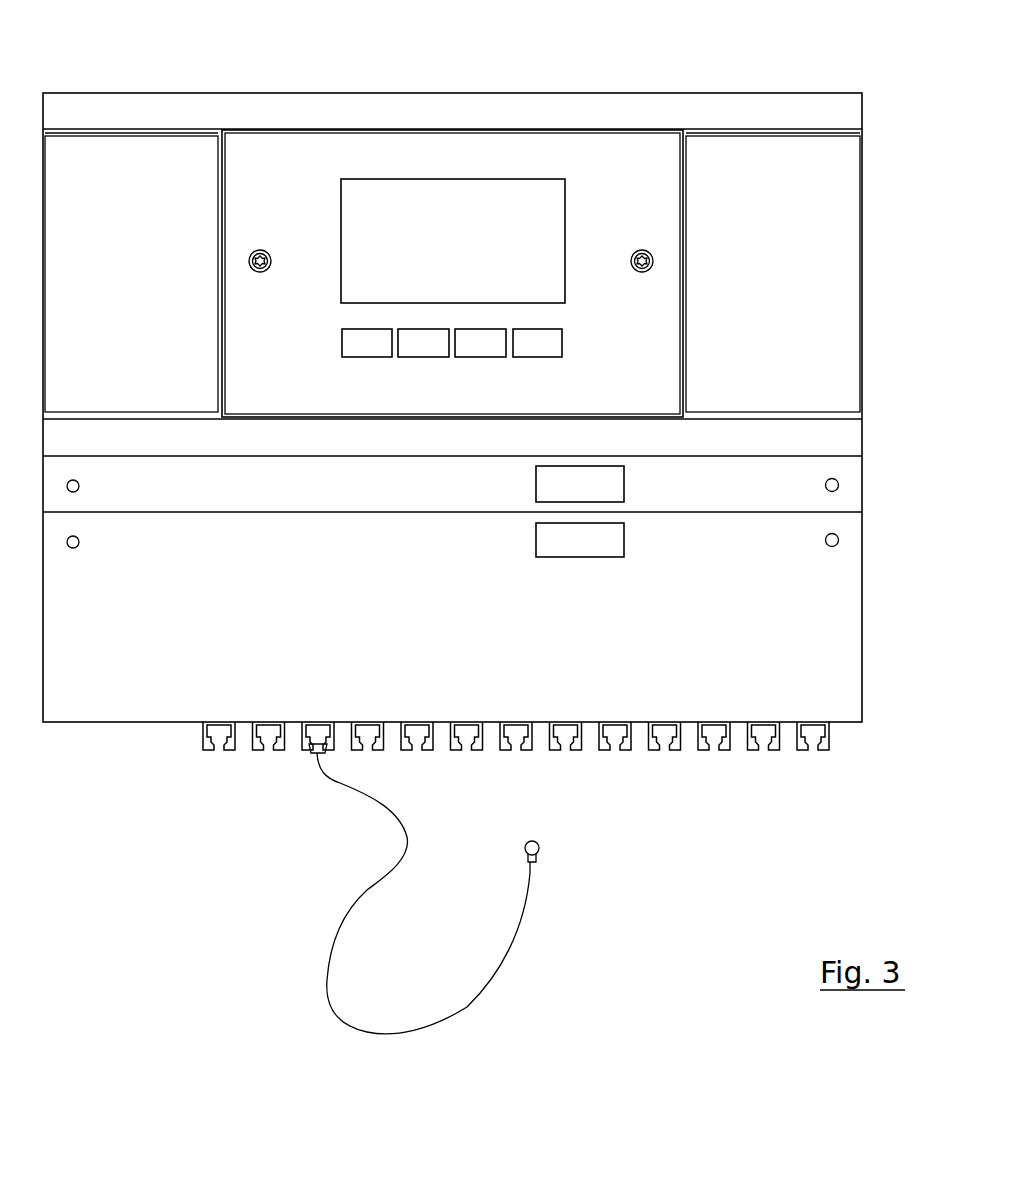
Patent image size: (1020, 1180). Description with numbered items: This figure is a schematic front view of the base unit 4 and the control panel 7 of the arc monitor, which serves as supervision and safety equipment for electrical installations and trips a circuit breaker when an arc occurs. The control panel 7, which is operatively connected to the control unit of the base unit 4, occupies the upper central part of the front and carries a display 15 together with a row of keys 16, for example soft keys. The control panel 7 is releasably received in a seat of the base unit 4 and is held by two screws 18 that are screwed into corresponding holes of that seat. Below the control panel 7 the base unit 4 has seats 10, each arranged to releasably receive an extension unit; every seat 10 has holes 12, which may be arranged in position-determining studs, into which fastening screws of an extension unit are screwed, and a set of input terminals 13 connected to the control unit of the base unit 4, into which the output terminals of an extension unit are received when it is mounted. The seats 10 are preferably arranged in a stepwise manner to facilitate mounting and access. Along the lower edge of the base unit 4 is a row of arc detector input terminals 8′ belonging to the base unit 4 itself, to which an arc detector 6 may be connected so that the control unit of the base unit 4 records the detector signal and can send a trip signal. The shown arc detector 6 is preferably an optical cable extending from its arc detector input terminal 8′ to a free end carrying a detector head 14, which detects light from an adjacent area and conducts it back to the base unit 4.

The base unit 4 is at (280, 112).
The control panel 7 is at (720, 258).
The display 15 is at (548, 200).
The key 16 is at (543, 343).
The screws 18 is at (265, 268).
The seat 10 is at (412, 503).
The holes 12 is at (80, 486).
The input terminals 13 is at (607, 483).
The arc detector input terminal 8′ is at (815, 744).
The arc detector 6 is at (343, 1017).
The detector head 14 is at (538, 837).